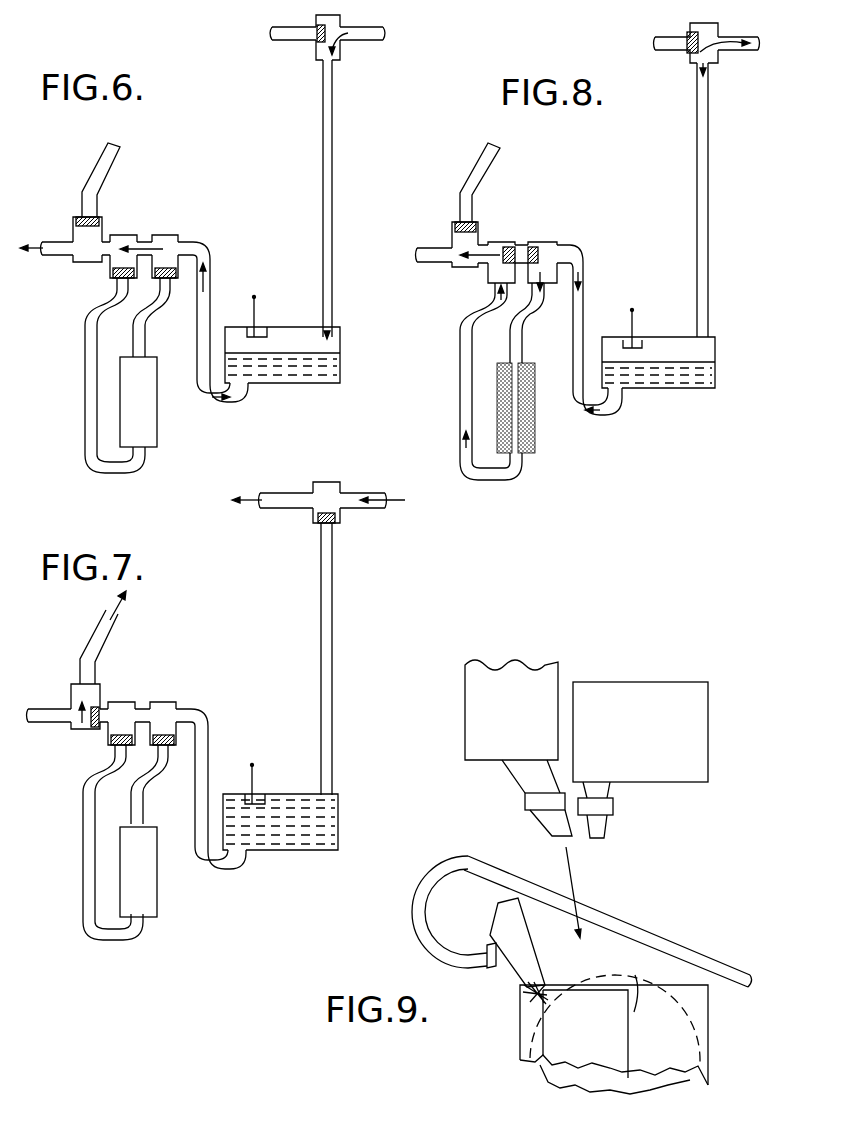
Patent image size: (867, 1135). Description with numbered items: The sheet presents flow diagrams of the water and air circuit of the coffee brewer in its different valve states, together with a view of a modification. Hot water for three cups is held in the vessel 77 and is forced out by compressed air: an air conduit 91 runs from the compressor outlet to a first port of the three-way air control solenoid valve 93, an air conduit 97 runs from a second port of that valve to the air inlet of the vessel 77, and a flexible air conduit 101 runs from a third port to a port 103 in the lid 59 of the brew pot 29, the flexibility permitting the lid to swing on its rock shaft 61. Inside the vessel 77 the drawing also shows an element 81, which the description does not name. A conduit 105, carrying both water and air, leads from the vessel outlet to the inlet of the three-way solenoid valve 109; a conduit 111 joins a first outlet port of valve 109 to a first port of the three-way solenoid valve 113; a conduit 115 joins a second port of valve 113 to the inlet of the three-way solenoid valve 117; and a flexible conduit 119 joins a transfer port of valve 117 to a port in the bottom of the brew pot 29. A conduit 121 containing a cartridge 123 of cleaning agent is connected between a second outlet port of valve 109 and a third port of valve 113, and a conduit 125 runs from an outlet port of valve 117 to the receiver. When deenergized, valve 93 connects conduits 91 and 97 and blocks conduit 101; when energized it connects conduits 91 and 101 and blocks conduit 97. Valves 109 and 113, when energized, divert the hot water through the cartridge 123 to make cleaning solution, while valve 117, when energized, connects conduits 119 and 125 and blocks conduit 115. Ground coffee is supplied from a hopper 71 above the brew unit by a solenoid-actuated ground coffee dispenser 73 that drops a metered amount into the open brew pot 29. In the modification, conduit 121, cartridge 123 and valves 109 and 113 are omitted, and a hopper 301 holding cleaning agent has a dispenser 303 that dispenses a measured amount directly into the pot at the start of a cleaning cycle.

In FIG. 9, the brew pot 29 is at (655, 1020).
In FIG. 9, the lid 59 is at (498, 905).
In FIG. 9, the rock shaft 61 is at (525, 998).
In FIG. 9, the hopper 71 is at (650, 738).
In FIG. 9, the ground coffee dispenser 73 is at (613, 808).
In FIG. 6, the vessel 77 is at (326, 383).
In FIG. 7, the vessel 77 is at (289, 835).
In FIG. 8, the vessel 77 is at (710, 388).
In FIG. 6, the float valve 81 is at (268, 335).
In FIG. 7, the float valve 81 is at (272, 784).
In FIG. 8, the float valve 81 is at (643, 345).
In FIG. 6, the air conduit 91 is at (371, 41).
In FIG. 7, the air conduit 91 is at (362, 508).
In FIG. 8, the air conduit 91 is at (748, 50).
In FIG. 6, the three-way air control solenoid valve 93 is at (338, 19).
In FIG. 7, the three-way air control solenoid valve 93 is at (336, 482).
In FIG. 8, the three-way air control solenoid valve 93 is at (718, 27).
In FIG. 6, the air conduit 97 is at (333, 150).
In FIG. 7, the air conduit 97 is at (333, 650).
In FIG. 8, the air conduit 97 is at (709, 210).
In FIG. 6, the air conduit 101 is at (282, 40).
In FIG. 7, the air conduit 101 is at (280, 508).
In FIG. 8, the air conduit 101 is at (665, 50).
In FIG. 9, the air conduit 101 is at (632, 922).
In FIG. 9, the port 103 is at (494, 968).
In FIG. 6, the conduit 105 is at (213, 402).
In FIG. 7, the conduit 105 is at (220, 875).
In FIG. 8, the conduit 105 is at (596, 415).
In FIG. 6, the three-way solenoid valve 109 is at (182, 236).
In FIG. 7, the three-way solenoid valve 109 is at (203, 770).
In FIG. 8, the three-way solenoid valve 109 is at (558, 245).
In FIG. 6, the conduit 111 is at (148, 240).
In FIG. 7, the conduit 111 is at (166, 710).
In FIG. 8, the conduit 111 is at (532, 242).
In FIG. 6, the three-way solenoid valve 113 is at (120, 235).
In FIG. 7, the three-way solenoid valve 113 is at (129, 707).
In FIG. 8, the three-way solenoid valve 113 is at (503, 242).
In FIG. 6, the conduit 115 is at (104, 262).
In FIG. 7, the conduit 115 is at (133, 735).
In FIG. 8, the conduit 115 is at (486, 267).
In FIG. 6, the three-way solenoid valve 117 is at (74, 227).
In FIG. 7, the three-way solenoid valve 117 is at (67, 698).
In FIG. 8, the three-way solenoid valve 117 is at (453, 232).
In FIG. 6, the conduit 119 is at (56, 257).
In FIG. 7, the conduit 119 is at (42, 730).
In FIG. 8, the conduit 119 is at (437, 262).
In FIG. 6, the conduit 121 is at (135, 334).
In FIG. 7, the conduit 121 is at (125, 842).
In FIG. 8, the conduit 121 is at (512, 337).
In FIG. 6, the cartridge 123 is at (157, 447).
In FIG. 7, the cartridge 123 is at (158, 883).
In FIG. 8, the cartridge 123 is at (535, 453).
In FIG. 6, the conduit 125 is at (118, 150).
In FIG. 7, the conduit 125 is at (118, 637).
In FIG. 8, the conduit 125 is at (498, 152).
In FIG. 9, the hopper 301 is at (522, 717).
In FIG. 9, the dispenser 303 is at (525, 802).